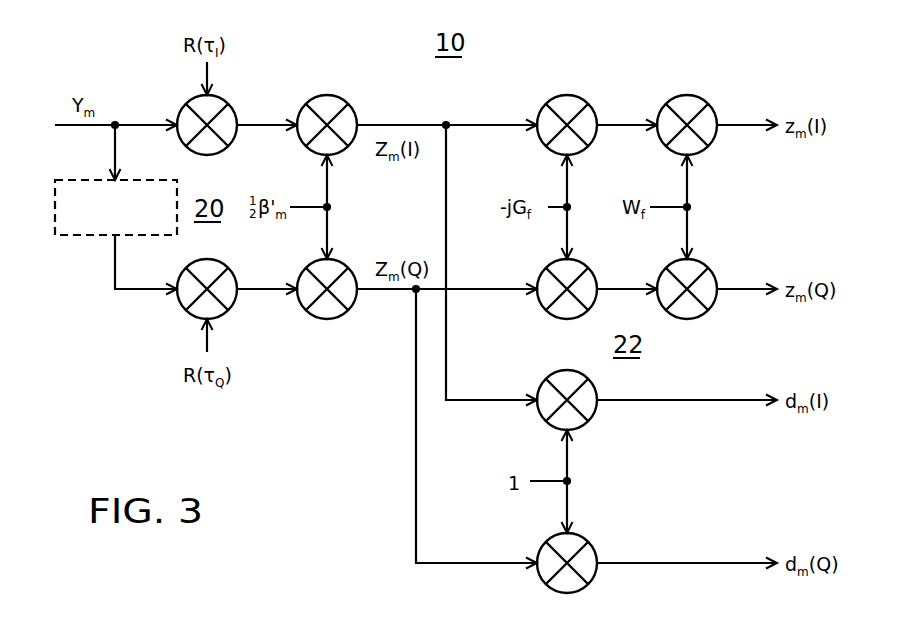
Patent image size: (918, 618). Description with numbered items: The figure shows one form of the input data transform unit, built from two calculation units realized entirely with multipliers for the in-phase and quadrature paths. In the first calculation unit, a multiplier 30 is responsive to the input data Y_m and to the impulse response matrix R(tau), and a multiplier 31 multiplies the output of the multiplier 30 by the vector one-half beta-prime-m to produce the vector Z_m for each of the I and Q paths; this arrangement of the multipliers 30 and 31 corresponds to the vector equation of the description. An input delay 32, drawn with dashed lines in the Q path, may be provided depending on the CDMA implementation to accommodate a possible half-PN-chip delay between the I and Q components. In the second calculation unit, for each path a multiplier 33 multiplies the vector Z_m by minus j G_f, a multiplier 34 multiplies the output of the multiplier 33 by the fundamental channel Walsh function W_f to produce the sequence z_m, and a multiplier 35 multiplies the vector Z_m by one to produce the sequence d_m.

The multiplier 30 is at (187, 102).
The multiplier 31 is at (320, 97).
The input delay 32 is at (103, 232).
The multiplier 33 is at (562, 100).
The multiplier 34 is at (683, 100).
The multiplier 35 is at (587, 413).